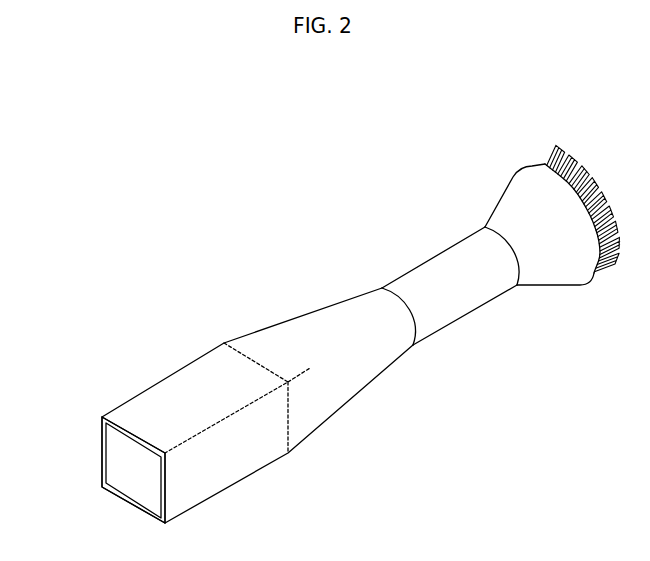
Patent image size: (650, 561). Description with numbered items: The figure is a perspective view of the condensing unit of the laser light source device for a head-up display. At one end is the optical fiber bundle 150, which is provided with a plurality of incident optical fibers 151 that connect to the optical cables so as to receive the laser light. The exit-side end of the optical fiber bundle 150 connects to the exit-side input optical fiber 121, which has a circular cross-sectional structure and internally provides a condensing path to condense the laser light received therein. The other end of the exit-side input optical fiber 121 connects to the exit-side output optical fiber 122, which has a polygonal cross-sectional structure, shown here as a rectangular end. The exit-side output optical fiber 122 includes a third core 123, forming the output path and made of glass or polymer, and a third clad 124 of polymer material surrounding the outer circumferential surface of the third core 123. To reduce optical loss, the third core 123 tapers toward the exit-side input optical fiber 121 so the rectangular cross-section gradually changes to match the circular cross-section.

The exit-side input optical fiber 121 is at (443, 272).
The exit-side output optical fiber 122 is at (168, 397).
The third core 123 is at (104, 465).
The third clad 124 is at (100, 448).
The optical fiber bundle 150 is at (557, 273).
The incident optical fibers 151 is at (542, 151).